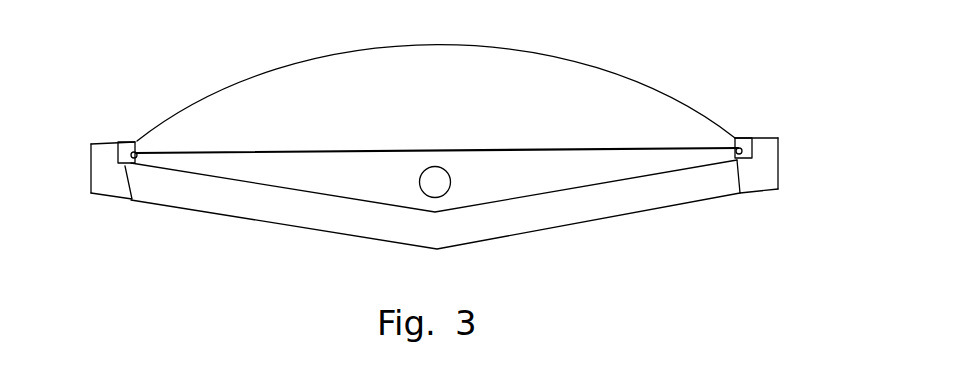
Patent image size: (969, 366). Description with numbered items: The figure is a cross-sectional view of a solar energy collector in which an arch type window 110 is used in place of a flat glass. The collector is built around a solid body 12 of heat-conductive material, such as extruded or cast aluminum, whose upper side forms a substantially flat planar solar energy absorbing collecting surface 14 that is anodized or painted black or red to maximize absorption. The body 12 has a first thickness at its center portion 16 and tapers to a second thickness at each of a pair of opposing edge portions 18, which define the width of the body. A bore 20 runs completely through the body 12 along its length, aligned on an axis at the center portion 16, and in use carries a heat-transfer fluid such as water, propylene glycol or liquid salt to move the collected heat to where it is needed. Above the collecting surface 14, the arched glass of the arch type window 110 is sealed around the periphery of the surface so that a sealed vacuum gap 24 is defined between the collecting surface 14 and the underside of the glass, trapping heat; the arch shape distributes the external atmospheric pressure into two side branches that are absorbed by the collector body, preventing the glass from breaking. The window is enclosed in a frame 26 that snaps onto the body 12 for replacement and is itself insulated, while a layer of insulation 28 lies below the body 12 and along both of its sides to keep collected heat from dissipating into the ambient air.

The arch type window 110 is at (439, 150).
The solid body 12 is at (328, 185).
The planar solar energy absorbing collecting surface 14 is at (436, 167).
The center portion 16 is at (434, 201).
The opposing edge portions 18 is at (439, 185).
The bore 20 is at (407, 180).
The sealed vacuum gap 24 is at (436, 93).
The frame 26 is at (437, 129).
The layer of insulation 28 is at (439, 214).